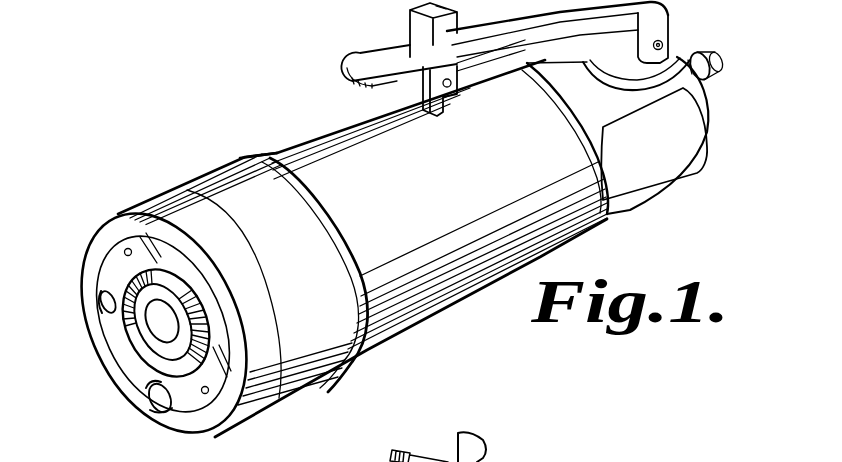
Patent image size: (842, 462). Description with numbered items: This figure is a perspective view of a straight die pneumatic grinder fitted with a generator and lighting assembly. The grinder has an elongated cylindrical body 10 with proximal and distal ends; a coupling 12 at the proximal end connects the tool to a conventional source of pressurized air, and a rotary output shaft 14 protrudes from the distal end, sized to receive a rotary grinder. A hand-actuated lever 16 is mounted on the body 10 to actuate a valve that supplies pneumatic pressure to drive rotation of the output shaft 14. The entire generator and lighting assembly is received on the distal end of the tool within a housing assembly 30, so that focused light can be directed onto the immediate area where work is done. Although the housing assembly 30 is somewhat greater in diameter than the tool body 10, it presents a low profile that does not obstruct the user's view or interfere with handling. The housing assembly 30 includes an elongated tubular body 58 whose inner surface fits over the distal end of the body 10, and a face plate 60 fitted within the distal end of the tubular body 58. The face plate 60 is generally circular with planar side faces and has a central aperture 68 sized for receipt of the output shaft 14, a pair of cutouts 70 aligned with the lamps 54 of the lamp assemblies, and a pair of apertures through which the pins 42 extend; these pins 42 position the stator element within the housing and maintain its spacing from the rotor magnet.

The body 10 is at (398, 336).
The coupling 12 is at (720, 72).
The rotary output shaft 14 is at (202, 315).
The hand-actuated lever 16 is at (380, 53).
The housing assembly 30 is at (216, 133).
The pins 42 is at (124, 249).
The filament-type lamp 54 is at (100, 299).
The elongated tubular body 58 is at (296, 389).
The face plate 60 is at (116, 252).
The central aperture 68 is at (178, 285).
The cutouts 70 is at (113, 312).